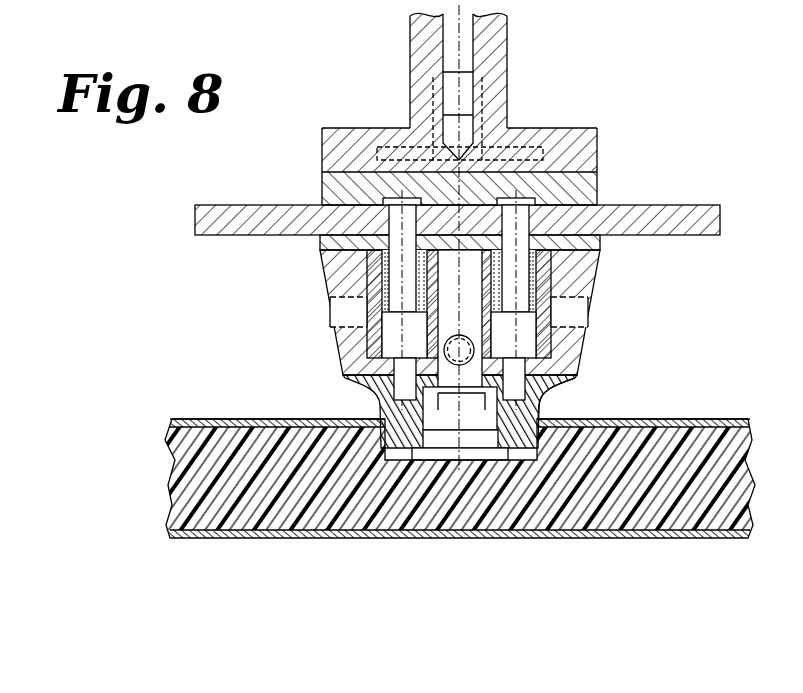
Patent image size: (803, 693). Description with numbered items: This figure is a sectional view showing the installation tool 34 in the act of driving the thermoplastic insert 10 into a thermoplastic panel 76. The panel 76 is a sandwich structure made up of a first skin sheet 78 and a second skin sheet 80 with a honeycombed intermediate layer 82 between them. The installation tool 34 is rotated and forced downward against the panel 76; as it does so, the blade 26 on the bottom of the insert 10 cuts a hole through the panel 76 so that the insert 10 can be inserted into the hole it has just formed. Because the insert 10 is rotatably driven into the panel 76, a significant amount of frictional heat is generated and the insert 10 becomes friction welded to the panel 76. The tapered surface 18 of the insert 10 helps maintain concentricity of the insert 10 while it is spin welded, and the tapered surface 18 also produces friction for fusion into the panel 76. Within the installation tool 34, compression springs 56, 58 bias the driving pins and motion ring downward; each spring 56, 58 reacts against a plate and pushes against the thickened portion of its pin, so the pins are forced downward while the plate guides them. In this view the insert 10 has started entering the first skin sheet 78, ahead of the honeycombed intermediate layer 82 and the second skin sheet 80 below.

The thermoplastic insert 10 is at (547, 405).
The tapered surface 18 is at (360, 393).
The blade 26 is at (500, 460).
The installation tool 34 is at (457, 211).
The compression spring 56 is at (363, 275).
The compression spring 58 is at (553, 275).
The thermoplastic panel 76 is at (193, 418).
The first skin sheet 78 is at (235, 418).
The second skin sheet 80 is at (235, 538).
The honeycombed intermediate layer 82 is at (162, 462).